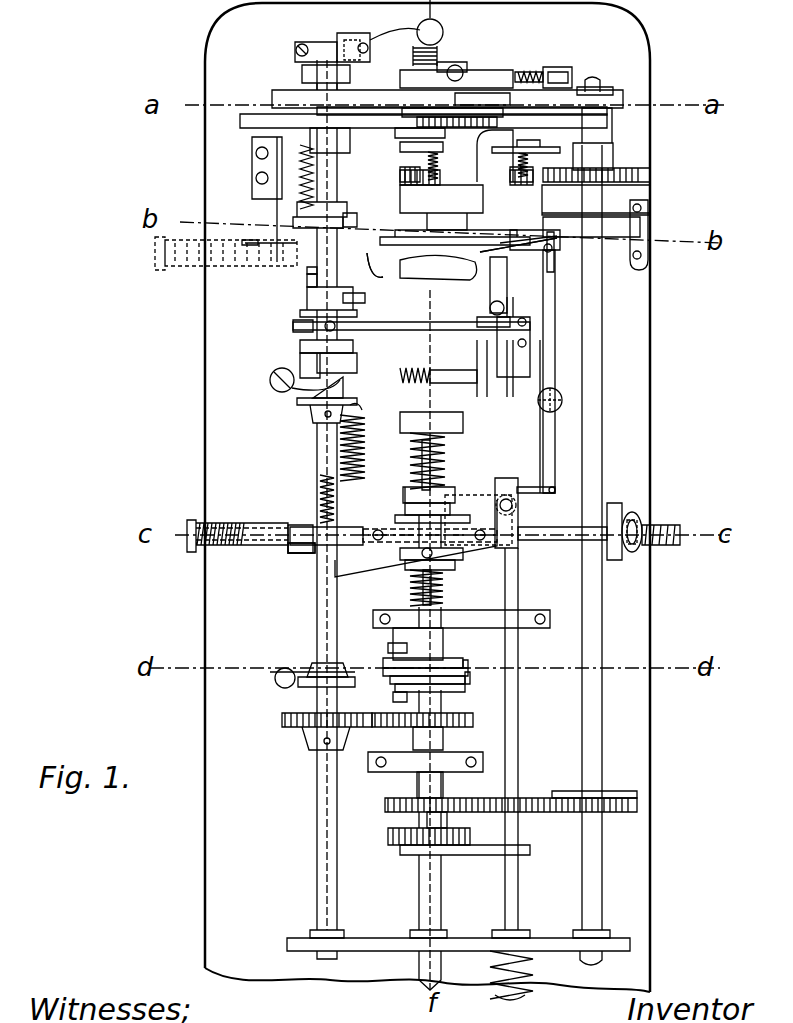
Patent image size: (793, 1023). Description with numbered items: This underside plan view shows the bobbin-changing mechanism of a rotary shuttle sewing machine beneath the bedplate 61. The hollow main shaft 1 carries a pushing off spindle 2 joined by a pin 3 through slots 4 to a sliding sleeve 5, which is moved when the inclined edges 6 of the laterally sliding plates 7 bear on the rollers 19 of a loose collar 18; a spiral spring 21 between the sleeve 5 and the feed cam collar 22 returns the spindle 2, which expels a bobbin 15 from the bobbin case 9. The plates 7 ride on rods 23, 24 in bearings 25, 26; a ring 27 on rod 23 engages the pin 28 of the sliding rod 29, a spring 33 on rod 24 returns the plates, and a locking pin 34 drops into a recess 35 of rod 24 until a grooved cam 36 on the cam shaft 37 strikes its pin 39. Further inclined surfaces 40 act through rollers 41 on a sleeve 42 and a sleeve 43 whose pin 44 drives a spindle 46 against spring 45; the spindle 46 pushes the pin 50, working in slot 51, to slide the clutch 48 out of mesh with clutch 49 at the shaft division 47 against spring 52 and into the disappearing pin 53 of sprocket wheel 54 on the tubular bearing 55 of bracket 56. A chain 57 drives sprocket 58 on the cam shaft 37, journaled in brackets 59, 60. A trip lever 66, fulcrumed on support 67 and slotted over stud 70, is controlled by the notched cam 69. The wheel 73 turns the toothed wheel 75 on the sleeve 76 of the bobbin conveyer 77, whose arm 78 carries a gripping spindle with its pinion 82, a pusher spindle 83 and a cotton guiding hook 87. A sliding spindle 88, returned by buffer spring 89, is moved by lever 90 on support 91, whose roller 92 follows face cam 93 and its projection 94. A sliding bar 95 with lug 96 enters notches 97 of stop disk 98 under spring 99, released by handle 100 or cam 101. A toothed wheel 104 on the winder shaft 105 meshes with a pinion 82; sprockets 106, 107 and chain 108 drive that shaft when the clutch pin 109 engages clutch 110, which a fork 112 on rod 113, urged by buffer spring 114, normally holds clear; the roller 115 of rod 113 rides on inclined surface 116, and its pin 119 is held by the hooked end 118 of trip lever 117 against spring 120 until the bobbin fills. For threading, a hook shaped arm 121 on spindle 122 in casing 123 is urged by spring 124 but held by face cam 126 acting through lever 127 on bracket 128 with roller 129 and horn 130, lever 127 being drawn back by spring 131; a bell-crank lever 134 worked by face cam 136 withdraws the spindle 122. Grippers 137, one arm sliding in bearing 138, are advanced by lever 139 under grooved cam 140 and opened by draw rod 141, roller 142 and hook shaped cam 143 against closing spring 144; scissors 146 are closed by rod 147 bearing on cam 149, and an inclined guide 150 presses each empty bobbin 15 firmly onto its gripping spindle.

The main shaft 1 is at (430, 640).
The spring 2 is at (446, 466).
The block 3 is at (450, 494).
The pin 4 is at (413, 485).
The plate 5 is at (405, 505).
The bar 6 is at (397, 516).
The screw 7 is at (429, 534).
The lever 9 is at (450, 268).
The cam plates 15 is at (440, 245).
The block 18 is at (495, 495).
The rod 19 is at (400, 528).
The pin 21 is at (420, 448).
The block 22 is at (431, 422).
The rod 23 is at (557, 540).
The bolt 24 is at (270, 542).
The bracket 25 is at (607, 510).
The bar 26 is at (295, 527).
The pin 27 is at (633, 552).
The ring 28 is at (633, 512).
The screw 29 is at (665, 525).
The thread 33 is at (225, 528).
The plate 34 is at (305, 555).
The thread 35 is at (248, 530).
The block 36 is at (300, 550).
The shaft 37 is at (317, 618).
The spring 39 is at (318, 515).
The link 40 is at (380, 568).
The block 41 is at (440, 553).
The block 42 is at (440, 562).
The spring 43 is at (443, 590).
The pin 44 is at (423, 598).
The plate 45 is at (470, 612).
The plate 46 is at (468, 672).
The block 47 is at (445, 655).
The plate 48 is at (465, 682).
The plate 49 is at (385, 663).
The pin 50 is at (468, 664).
The pin 51 is at (470, 690).
The plate 52 is at (455, 692).
The pawl 53 is at (393, 697).
The hub 54 is at (445, 730).
The neck 55 is at (443, 785).
The box 56 is at (425, 762).
The gear 57 is at (473, 720).
The gear 58 is at (302, 730).
The base plate 59 is at (327, 942).
The top bar 60 is at (447, 97).
The space 61 is at (365, 884).
The cap 66 is at (388, 650).
The roller 67 is at (275, 683).
The base 69 is at (310, 684).
The hub 70 is at (325, 666).
The top plate 73 is at (265, 121).
The plate 75 is at (440, 78).
The gear 76 is at (434, 171).
The gear 77 is at (500, 185).
The block 78 is at (595, 211).
The spring 82 is at (415, 175).
The plate 83 is at (400, 150).
The pin 87 is at (550, 255).
The block 88 is at (447, 66).
The spring 89 is at (440, 50).
The knob 90 is at (406, 32).
The screw 91 is at (360, 42).
The screw 92 is at (300, 44).
The block 93 is at (336, 51).
The block 94 is at (318, 42).
The cam 95 is at (473, 66).
The plate 96 is at (503, 118).
The spring 97 is at (500, 95).
The rack 98 is at (495, 120).
The block 99 is at (540, 76).
The bar 100 is at (480, 96).
The block 101 is at (320, 72).
The gear 104 is at (612, 180).
The shaft 105 is at (602, 338).
The plate 106 is at (605, 795).
The gear 107 is at (470, 798).
The gear teeth 108 is at (545, 812).
The spool 109 is at (427, 818).
The block 110 is at (395, 840).
The plate 112 is at (480, 855).
The shaft 113 is at (518, 878).
The spring 114 is at (533, 970).
The pivot 115 is at (512, 505).
The outline 116 is at (477, 520).
The rod 117 is at (555, 432).
The rod 118 is at (543, 463).
The link 119 is at (552, 487).
The block 120 is at (530, 345).
The plate 121 is at (550, 245).
The plate 122 is at (350, 228).
The bolt 123 is at (230, 255).
The bracket 124 is at (265, 243).
The block 126 is at (320, 215).
The plate 127 is at (292, 232).
The block 128 is at (277, 198).
The pin 129 is at (307, 270).
The pin 130 is at (310, 282).
The spring 131 is at (300, 175).
The plate 134 is at (300, 352).
The hub 136 is at (312, 408).
The spring 137 is at (500, 252).
The screw 138 is at (538, 402).
The rod 139 is at (293, 324).
The end 140 is at (310, 332).
The spring 141 is at (445, 380).
The bracket 142 is at (345, 380).
The roller 143 is at (270, 383).
The spring end 144 is at (360, 405).
The arm 146 is at (507, 285).
The block 147 is at (345, 292).
The plate 149 is at (350, 300).
The arm 150 is at (375, 260).